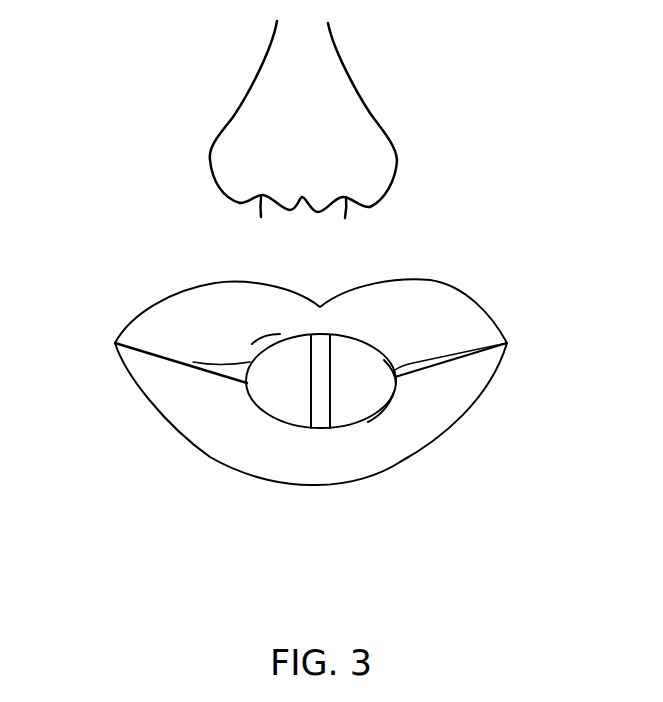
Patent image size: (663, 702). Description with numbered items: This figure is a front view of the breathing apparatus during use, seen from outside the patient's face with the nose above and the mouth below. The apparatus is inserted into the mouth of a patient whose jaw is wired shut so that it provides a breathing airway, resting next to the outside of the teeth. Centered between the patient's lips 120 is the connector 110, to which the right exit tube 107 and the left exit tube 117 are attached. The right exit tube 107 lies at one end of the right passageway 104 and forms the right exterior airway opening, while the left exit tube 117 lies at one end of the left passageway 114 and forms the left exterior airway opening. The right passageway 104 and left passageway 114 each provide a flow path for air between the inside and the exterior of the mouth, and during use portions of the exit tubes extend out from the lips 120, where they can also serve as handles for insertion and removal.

The right passageway 104 is at (288, 400).
The right exit tube 107 is at (277, 343).
The connector 110 is at (322, 418).
The left passageway 114 is at (362, 400).
The left exit tube 117 is at (377, 413).
The lips 120 is at (450, 325).